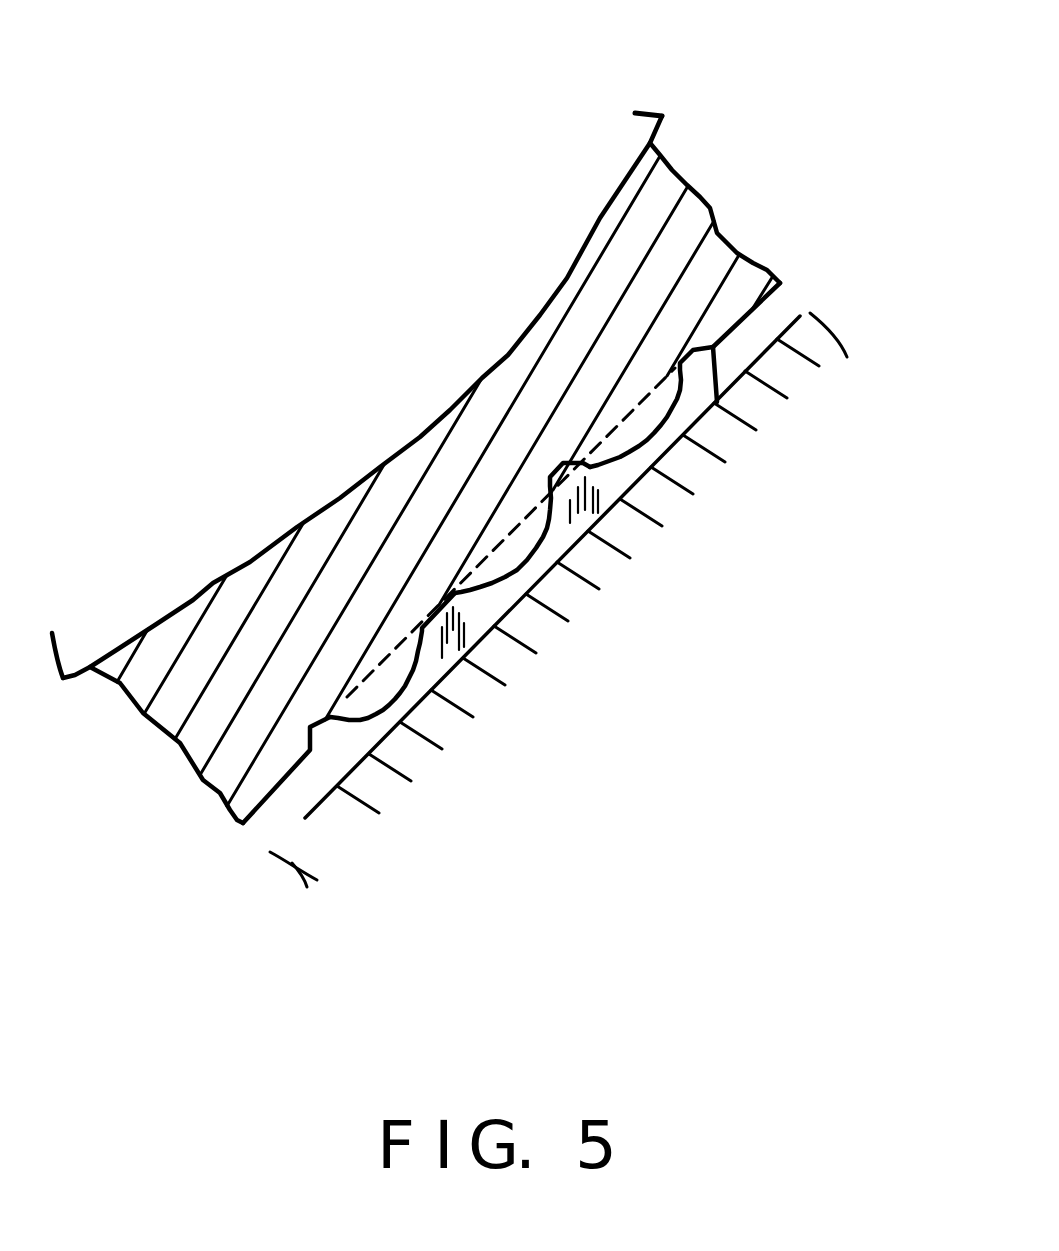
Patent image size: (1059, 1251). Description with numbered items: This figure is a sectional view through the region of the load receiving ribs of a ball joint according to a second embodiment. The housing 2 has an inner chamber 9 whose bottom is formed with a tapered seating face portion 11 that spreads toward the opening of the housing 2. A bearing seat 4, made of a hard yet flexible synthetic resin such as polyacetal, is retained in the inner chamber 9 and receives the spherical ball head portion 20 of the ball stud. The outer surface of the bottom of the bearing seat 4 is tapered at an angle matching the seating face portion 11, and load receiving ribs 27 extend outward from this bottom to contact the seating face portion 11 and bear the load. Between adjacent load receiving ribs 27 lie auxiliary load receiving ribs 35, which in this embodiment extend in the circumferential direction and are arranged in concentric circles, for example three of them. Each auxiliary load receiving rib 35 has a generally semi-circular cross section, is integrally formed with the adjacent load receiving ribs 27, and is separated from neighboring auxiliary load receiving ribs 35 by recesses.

The housing 2 is at (827, 333).
The bearing seat 4 is at (680, 227).
The inner chamber 9 is at (267, 820).
The seating face portion 11 is at (270, 852).
The ball head portion 20 is at (623, 126).
The load receiving ribs 27 is at (693, 412).
The auxiliary load receiving ribs 35 is at (646, 437).